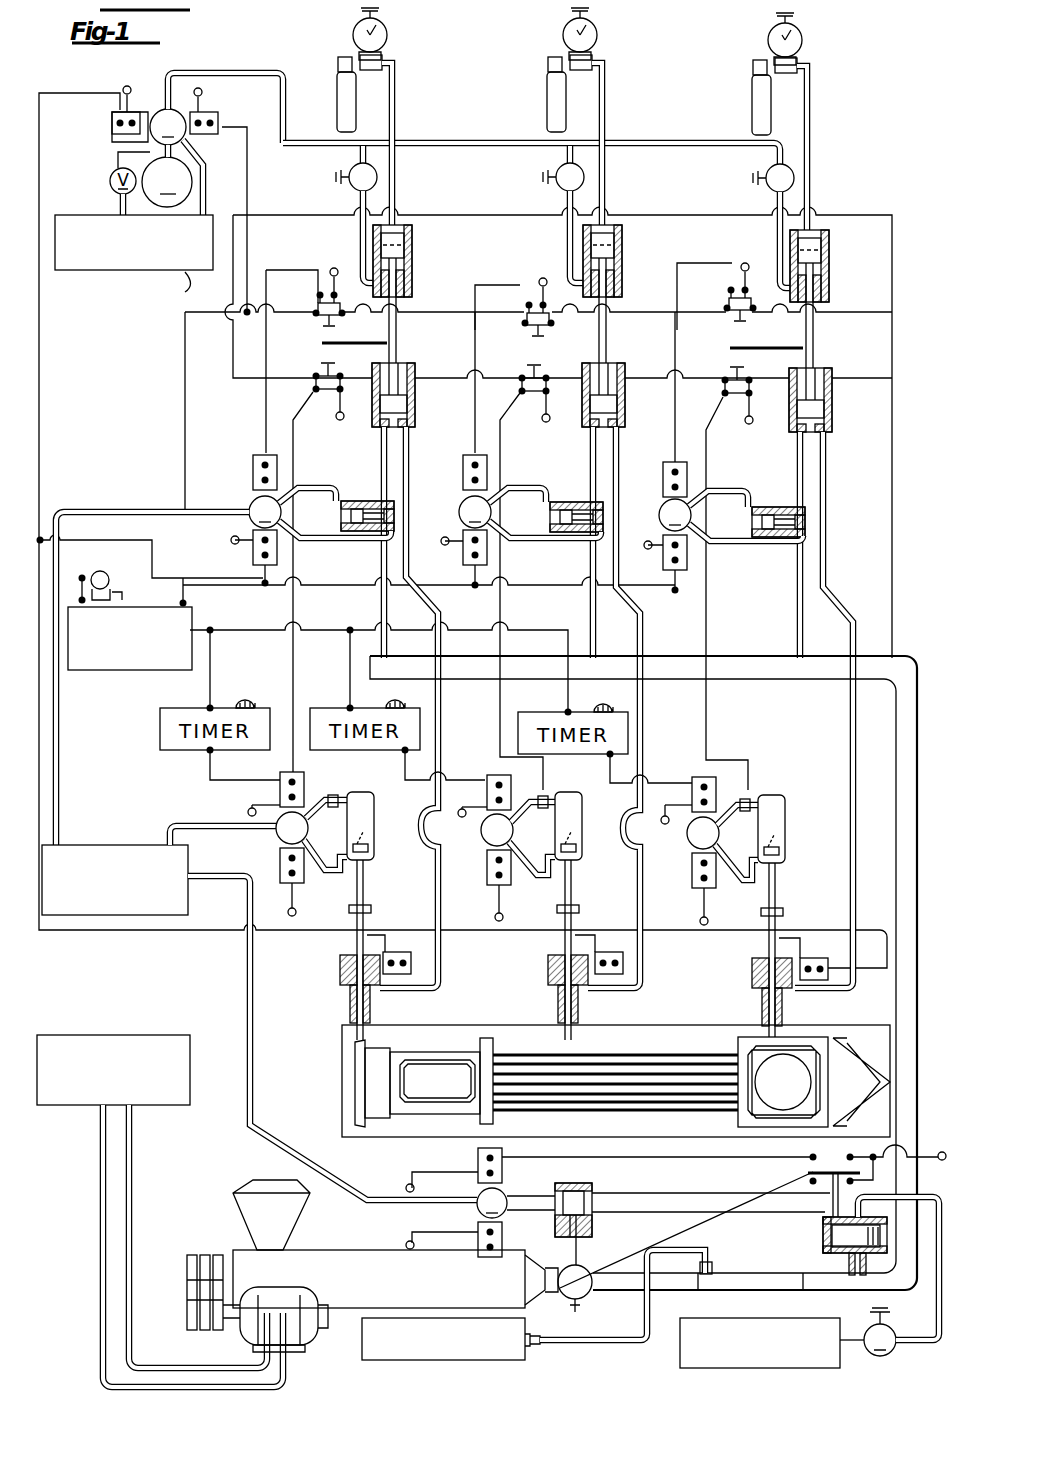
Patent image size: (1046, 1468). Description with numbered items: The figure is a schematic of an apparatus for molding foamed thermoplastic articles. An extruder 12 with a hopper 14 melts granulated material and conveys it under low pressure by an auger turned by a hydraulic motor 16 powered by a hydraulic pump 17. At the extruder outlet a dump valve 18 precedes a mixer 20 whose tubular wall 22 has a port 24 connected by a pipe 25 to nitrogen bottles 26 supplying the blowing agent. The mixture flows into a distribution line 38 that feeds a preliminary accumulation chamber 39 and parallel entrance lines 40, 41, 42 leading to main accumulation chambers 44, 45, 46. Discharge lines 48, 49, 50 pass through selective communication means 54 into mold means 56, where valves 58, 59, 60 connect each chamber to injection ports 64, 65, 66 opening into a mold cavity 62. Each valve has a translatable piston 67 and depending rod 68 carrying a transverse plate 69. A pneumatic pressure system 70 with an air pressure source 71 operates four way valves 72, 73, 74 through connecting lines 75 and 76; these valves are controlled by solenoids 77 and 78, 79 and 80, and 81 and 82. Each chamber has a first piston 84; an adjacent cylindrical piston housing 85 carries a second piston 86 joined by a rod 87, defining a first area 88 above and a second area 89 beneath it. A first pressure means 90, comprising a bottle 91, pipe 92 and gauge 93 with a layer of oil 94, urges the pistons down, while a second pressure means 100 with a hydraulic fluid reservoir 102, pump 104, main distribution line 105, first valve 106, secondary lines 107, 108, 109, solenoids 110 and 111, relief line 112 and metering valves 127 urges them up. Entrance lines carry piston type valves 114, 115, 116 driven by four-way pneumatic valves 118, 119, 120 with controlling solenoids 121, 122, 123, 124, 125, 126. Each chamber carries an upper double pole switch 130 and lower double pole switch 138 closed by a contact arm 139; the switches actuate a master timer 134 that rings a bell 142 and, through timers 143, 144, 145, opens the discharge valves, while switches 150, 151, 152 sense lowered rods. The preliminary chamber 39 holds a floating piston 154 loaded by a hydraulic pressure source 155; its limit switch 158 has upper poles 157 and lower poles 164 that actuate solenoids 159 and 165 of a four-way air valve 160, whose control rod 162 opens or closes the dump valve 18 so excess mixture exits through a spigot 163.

The extruder 12 is at (430, 1290).
The hopper 14 is at (233, 1215).
The motor 16 is at (290, 1292).
The hydraulic pump 17 is at (140, 1035).
The dump valve 18 is at (585, 1294).
The mixer 20 is at (760, 1256).
The tubular wall 22 is at (740, 1290).
The port 24 is at (722, 1266).
The pipe 25 is at (572, 1346).
The nitrogen bottles 26 is at (440, 1368).
The distribution line 38 is at (822, 680).
The preliminary accumulation chamber 39 is at (823, 1250).
The entrance line 40 is at (380, 448).
The entrance line 41 is at (590, 448).
The entrance line 42 is at (797, 450).
The main accumulation chamber 44 is at (415, 410).
The main accumulation chamber 45 is at (625, 410).
The main accumulation chamber 46 is at (836, 408).
The discharge line 48 is at (440, 695).
The discharge line 49 is at (640, 697).
The discharge line 50 is at (853, 748).
The selective communication means 54 is at (212, 813).
The mold means 56 is at (330, 1070).
The valve 58 is at (356, 784).
The valve 59 is at (564, 784).
The valve 60 is at (771, 788).
The mold cavity 62 is at (680, 1056).
The injection port 64 is at (377, 1002).
The injection port 65 is at (585, 1002).
The injection port 66 is at (789, 1005).
The translatable piston 67 is at (374, 838).
The depending rod 68 is at (340, 968).
The transverse plate 69 is at (372, 922).
The pneumatic pressure system 70 is at (85, 836).
The air pressure source 71 is at (136, 842).
The four way valve 72 is at (276, 830).
The four way valve 73 is at (481, 830).
The four way valve 74 is at (687, 836).
The connecting line 75 is at (531, 837).
The connecting line 76 is at (305, 797).
The solenoid 77 is at (280, 865).
The solenoid 78 is at (280, 800).
The solenoid 79 is at (487, 870).
The solenoid 80 is at (487, 790).
The solenoid 81 is at (692, 877).
The solenoid 82 is at (692, 790).
The first piston 84 is at (415, 366).
The cylindrical piston housing 85 is at (373, 258).
The second piston 86 is at (404, 261).
The rod 87 is at (397, 335).
The first area 88 is at (412, 238).
The second area 89 is at (404, 282).
The first pressure means 90 is at (325, 104).
The bottle 91 is at (338, 65).
The pipe 92 is at (395, 98).
The gauge 93 is at (387, 38).
The layer of oil 94 is at (373, 238).
The second pressure means 100 is at (120, 282).
The hydraulic fluid reservoir 102 is at (168, 286).
The pump 104 is at (192, 182).
The main distribution line 105 is at (483, 149).
The first valve 106 is at (168, 92).
The secondary line 107 is at (357, 200).
The secondary line 108 is at (566, 205).
The secondary line 109 is at (775, 213).
The solenoid 110 is at (112, 128).
The solenoid 111 is at (224, 122).
The relief line 112 is at (205, 165).
The piston type valve 114 is at (370, 488).
The piston type valve 115 is at (578, 488).
The piston type valve 116 is at (782, 490).
The four-way pneumatic valve 118 is at (255, 495).
The four-way pneumatic valve 119 is at (462, 498).
The four-way pneumatic valve 120 is at (666, 507).
The controlling solenoid 121 is at (253, 468).
The controlling solenoid 122 is at (256, 562).
The controlling solenoid 123 is at (463, 466).
The controlling solenoid 124 is at (463, 564).
The controlling solenoid 125 is at (665, 472).
The controlling solenoid 126 is at (665, 576).
The metering valve 127 is at (349, 175).
The upper double pole switch 130 is at (316, 312).
The timer 134 is at (175, 672).
The lower double pole switch 138 is at (313, 380).
The contact arm 139 is at (322, 343).
The bell 142 is at (115, 552).
The timer 143 is at (222, 700).
The timer 144 is at (340, 710).
The timer 145 is at (545, 712).
The switch 150 is at (411, 963).
The switch 151 is at (623, 963).
The switch 152 is at (828, 980).
The floating piston 154 is at (823, 1234).
The hydraulic pressure source 155 is at (730, 1370).
The upper poles 157 is at (808, 1170).
The limit switch 158 is at (880, 1170).
The solenoid 159 is at (504, 1167).
The four-way air valve 160 is at (477, 1200).
The control rod 162 is at (592, 1204).
The spigot 163 is at (574, 1304).
The lower poles 164 is at (812, 1183).
The solenoid 165 is at (478, 1236).